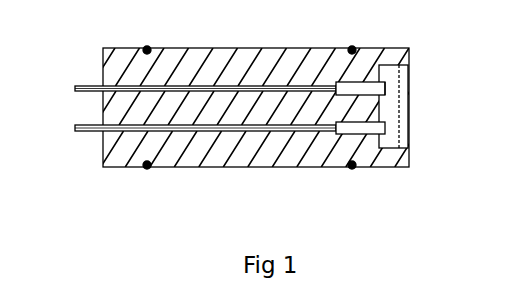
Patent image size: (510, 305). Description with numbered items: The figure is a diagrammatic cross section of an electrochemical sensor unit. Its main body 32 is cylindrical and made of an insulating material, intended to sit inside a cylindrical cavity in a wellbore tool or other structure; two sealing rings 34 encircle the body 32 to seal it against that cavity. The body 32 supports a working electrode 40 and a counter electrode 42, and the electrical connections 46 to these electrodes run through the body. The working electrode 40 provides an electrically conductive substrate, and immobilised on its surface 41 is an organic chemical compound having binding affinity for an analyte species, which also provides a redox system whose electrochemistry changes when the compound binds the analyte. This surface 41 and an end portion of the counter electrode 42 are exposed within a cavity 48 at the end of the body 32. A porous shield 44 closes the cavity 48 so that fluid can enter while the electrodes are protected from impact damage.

The main body 32 is at (242, 152).
The sealing rings 34 is at (147, 47).
The working electrode 40 is at (357, 85).
The surface 41 is at (386, 88).
The counter electrode 42 is at (358, 128).
The porous shield 44 is at (402, 133).
The electrical connections 46 is at (82, 87).
The cavity 48 is at (389, 105).